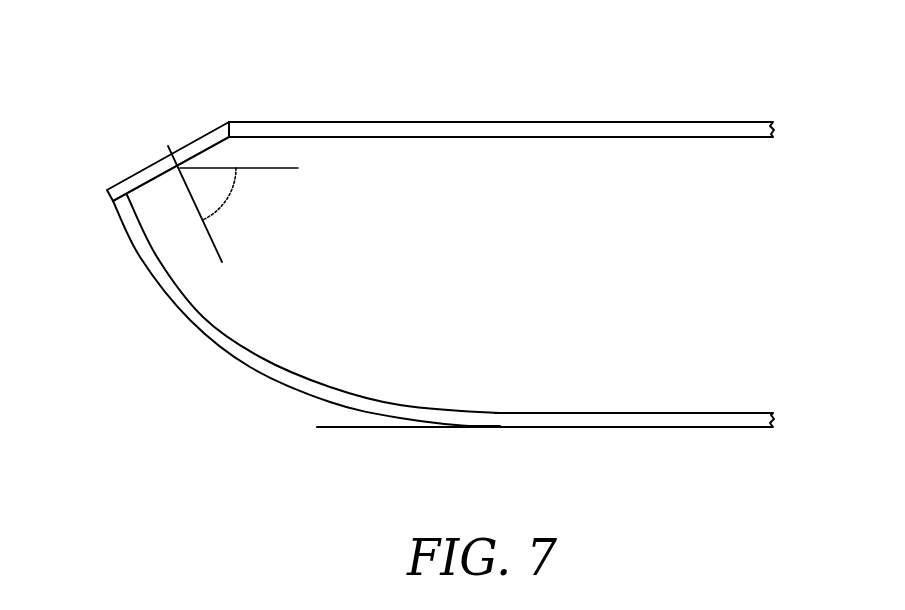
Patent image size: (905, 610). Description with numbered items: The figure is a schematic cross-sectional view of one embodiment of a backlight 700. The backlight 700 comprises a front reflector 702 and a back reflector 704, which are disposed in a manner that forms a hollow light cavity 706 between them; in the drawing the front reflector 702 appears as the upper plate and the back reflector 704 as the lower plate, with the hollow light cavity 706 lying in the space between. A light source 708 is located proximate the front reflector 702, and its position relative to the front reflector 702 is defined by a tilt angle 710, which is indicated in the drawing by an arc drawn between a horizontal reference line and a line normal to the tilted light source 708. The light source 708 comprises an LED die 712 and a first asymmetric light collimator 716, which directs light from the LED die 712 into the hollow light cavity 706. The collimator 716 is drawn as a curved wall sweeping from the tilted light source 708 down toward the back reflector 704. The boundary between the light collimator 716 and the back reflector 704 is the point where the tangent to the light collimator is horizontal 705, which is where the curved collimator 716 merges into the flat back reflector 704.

The backlight 700 is at (205, 65).
The front reflector 702 is at (547, 122).
The back reflector 704 is at (677, 428).
The horizontal tangent point 705 is at (495, 428).
The hollow light cavity 706 is at (560, 292).
The light source 708 is at (134, 172).
The tilt angle 710 is at (230, 199).
The LED die 712 is at (170, 150).
The first asymmetric light collimator 716 is at (190, 320).